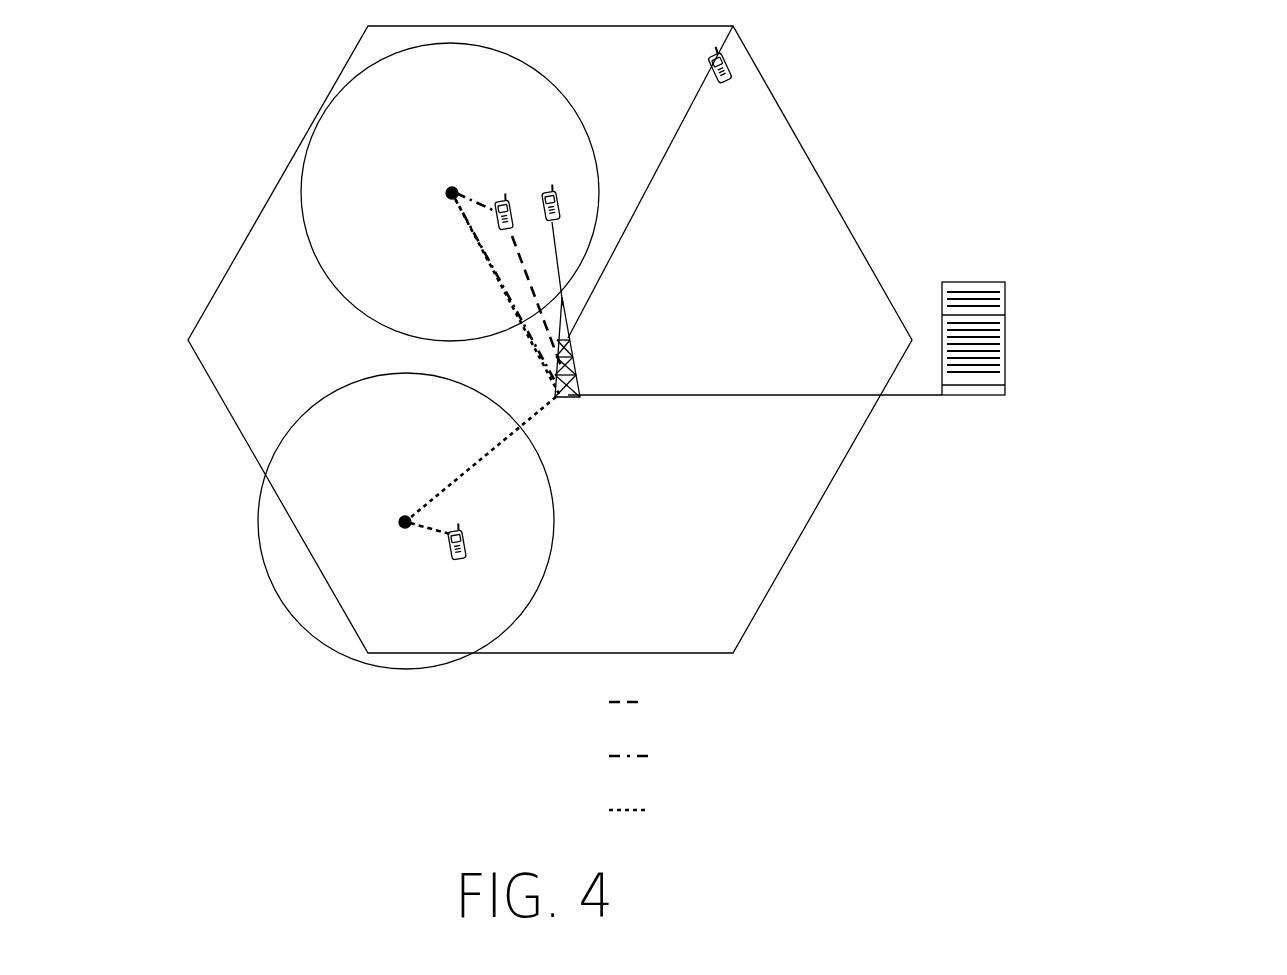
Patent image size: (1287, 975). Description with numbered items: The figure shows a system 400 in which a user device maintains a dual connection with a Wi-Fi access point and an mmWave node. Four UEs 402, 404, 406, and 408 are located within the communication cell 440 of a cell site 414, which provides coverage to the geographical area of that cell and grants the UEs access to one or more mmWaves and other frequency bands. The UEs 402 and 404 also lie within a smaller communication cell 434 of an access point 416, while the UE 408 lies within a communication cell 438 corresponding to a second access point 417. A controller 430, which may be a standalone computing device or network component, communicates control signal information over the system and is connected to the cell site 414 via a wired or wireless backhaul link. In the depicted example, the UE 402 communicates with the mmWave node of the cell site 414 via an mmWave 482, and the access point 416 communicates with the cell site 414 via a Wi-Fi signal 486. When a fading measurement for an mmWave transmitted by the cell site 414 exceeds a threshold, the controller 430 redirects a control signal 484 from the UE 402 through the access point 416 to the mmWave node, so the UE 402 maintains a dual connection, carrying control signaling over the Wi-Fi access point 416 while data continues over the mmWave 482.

The system 400 is at (102, 158).
The UE 402 is at (505, 196).
The UE 404 is at (554, 190).
The UE 406 is at (735, 42).
The UE 408 is at (463, 522).
The cell site 414 is at (574, 343).
The access point 416 is at (450, 192).
The access point 417 is at (402, 521).
The controller 430 is at (941, 282).
The communication cell 434 is at (414, 266).
The communication cell 438 is at (435, 615).
The communication cell 440 is at (694, 504).
The mmWave 482 is at (611, 702).
The control signal 484 is at (611, 756).
The Wi-Fi signal 486 is at (611, 810).